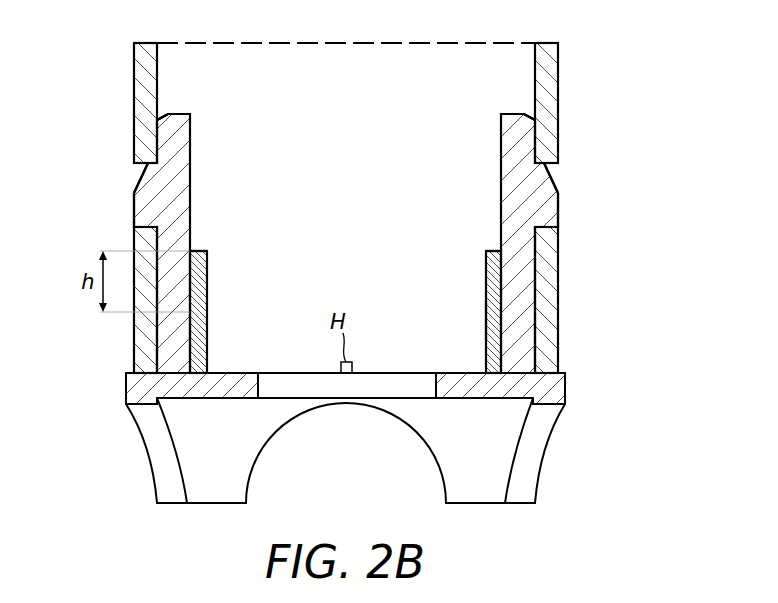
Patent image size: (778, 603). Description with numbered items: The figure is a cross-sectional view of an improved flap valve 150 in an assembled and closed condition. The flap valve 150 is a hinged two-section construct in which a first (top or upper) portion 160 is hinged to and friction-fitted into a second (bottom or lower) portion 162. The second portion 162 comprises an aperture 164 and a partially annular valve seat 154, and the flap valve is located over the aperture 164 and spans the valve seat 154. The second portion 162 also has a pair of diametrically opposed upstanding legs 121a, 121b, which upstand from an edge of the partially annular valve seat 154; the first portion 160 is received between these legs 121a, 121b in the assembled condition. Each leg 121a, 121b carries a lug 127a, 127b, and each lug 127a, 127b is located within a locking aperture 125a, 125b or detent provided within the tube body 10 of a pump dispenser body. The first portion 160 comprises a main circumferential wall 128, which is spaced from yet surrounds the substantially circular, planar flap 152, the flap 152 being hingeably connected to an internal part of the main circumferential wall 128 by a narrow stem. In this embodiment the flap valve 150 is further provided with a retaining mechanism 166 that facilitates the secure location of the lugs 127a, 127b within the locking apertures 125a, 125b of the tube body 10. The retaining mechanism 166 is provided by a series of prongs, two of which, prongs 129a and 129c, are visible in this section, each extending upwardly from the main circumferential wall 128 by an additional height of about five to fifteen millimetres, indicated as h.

The tube body 10 is at (558, 50).
The upstanding leg 121a is at (175, 114).
The upstanding leg 121b is at (517, 114).
The locking aperture 125a is at (134, 170).
The locking aperture 125b is at (558, 170).
The lug 127a is at (134, 211).
The lug 127b is at (558, 211).
The main circumferential wall 128 is at (207, 338).
The prong 129a is at (207, 258).
The prong 129c is at (486, 258).
The flap valve 150 is at (111, 461).
The flap 152 is at (389, 383).
The partially annular valve seat 154 is at (470, 398).
The first (top or upper) portion 160 is at (272, 307).
The second (bottom or lower) portion 162 is at (213, 169).
The aperture 164 is at (258, 383).
The retaining mechanism 166 is at (478, 316).